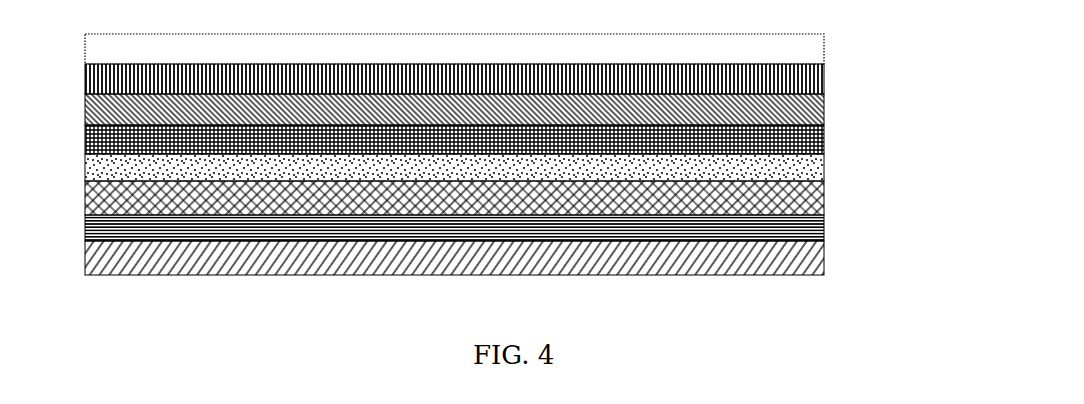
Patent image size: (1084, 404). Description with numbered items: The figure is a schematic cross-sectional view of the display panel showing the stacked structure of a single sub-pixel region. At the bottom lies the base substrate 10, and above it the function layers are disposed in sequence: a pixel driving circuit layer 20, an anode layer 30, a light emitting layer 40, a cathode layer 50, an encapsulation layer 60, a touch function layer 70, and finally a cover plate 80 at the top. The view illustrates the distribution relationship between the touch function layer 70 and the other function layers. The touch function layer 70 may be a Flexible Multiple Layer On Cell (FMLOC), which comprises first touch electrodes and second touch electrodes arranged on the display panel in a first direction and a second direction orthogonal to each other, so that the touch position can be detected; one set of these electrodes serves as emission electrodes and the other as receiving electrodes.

The base substrate 10 is at (816, 246).
The pixel driving circuit layer 20 is at (816, 218).
The anode layer 30 is at (816, 183).
The light emitting layer 40 is at (816, 158).
The cathode layer 50 is at (816, 128).
The encapsulation layer 60 is at (816, 97).
The touch function layer 70 is at (816, 58).
The cover plate 80 is at (793, 46).